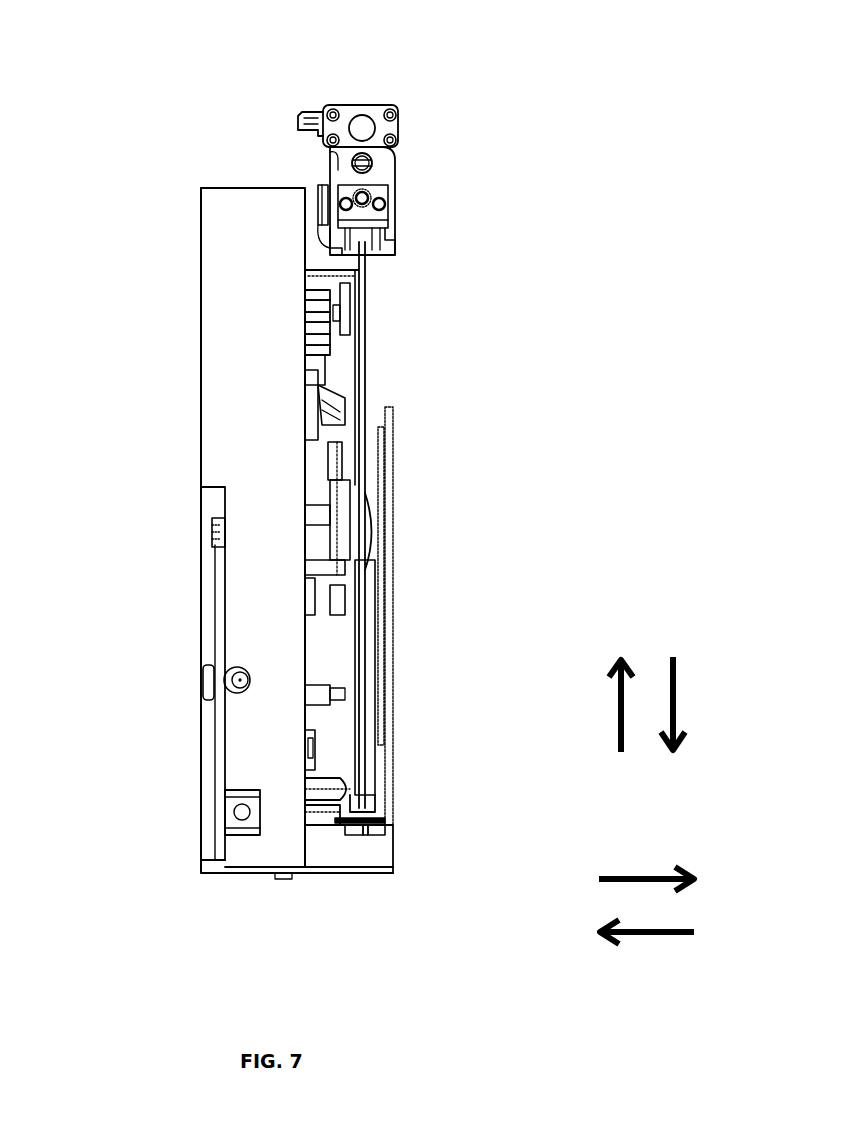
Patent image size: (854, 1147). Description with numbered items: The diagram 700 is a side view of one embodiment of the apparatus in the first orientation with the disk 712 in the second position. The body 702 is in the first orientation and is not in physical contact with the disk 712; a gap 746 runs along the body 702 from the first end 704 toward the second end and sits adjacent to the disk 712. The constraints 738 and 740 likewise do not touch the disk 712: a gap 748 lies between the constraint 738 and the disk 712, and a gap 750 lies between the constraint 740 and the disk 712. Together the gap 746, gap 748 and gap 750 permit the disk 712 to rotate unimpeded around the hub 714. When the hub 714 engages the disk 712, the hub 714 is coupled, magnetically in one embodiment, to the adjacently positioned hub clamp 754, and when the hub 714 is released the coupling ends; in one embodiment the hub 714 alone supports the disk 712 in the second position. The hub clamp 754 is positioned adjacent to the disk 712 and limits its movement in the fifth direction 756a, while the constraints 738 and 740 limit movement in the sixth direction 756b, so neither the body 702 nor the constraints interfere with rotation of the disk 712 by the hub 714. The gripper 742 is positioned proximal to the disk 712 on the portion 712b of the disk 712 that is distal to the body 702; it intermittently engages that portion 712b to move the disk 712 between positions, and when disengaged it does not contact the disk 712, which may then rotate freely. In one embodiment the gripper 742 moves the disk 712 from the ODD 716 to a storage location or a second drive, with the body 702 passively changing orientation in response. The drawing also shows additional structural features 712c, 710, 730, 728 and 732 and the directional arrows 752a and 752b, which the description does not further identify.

The diagram 700 is at (309, 35).
The gripper 742 is at (366, 174).
The constraint 740 is at (305, 270).
The gap 750 is at (305, 293).
The ODD 716 is at (258, 345).
The portion of the disk 712b is at (366, 334).
The hub clamp 754 is at (393, 490).
The hub 714 is at (363, 512).
The gap 748 is at (345, 517).
The constraint 738 is at (340, 562).
The disk 712 is at (358, 634).
The bracket 712c is at (360, 716).
The body 702 is at (348, 793).
The gap 746 is at (330, 797).
The first end 704 is at (345, 812).
The base plate 710 is at (228, 866).
The fastener 730 is at (355, 836).
The spacer 728 is at (363, 838).
The fastener 732 is at (374, 836).
The upward direction 752a is at (618, 705).
The downward direction 752b is at (676, 704).
The fifth direction 756a is at (648, 872).
The sixth direction 756b is at (648, 940).